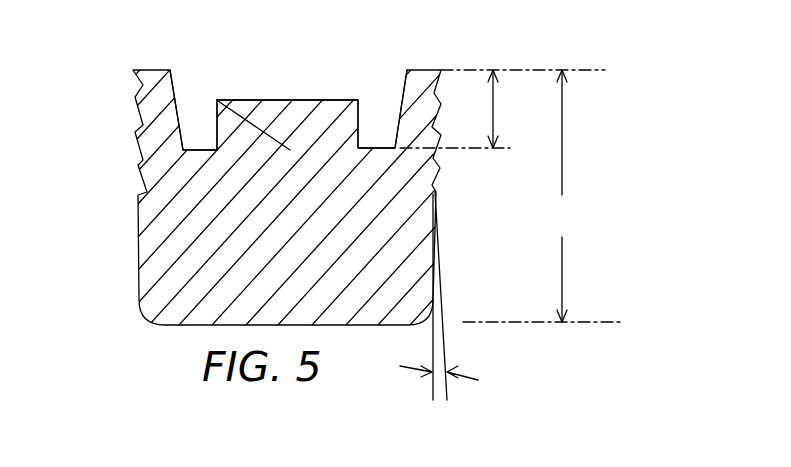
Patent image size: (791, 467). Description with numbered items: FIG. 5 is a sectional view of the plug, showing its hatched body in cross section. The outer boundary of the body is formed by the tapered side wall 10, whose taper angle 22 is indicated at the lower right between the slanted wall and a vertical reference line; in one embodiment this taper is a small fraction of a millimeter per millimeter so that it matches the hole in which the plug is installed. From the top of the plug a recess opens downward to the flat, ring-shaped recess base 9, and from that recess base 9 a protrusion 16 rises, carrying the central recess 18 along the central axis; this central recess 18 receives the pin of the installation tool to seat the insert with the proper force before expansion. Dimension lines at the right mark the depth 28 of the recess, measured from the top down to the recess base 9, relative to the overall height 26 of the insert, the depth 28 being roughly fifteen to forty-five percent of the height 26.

The side wall 10 is at (138, 210).
The protrusion 16 is at (216, 126).
The central recess 18 is at (313, 118).
The recess base 9 is at (376, 150).
The depth 28 is at (488, 110).
The height 26 is at (565, 213).
The taper angle 22 is at (458, 296).